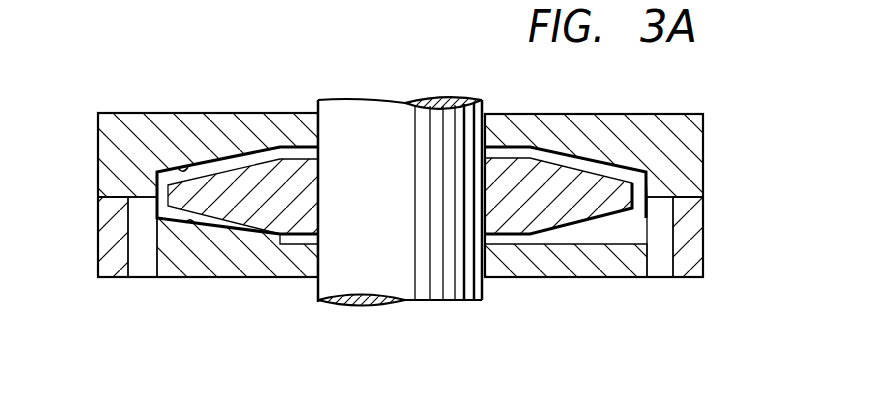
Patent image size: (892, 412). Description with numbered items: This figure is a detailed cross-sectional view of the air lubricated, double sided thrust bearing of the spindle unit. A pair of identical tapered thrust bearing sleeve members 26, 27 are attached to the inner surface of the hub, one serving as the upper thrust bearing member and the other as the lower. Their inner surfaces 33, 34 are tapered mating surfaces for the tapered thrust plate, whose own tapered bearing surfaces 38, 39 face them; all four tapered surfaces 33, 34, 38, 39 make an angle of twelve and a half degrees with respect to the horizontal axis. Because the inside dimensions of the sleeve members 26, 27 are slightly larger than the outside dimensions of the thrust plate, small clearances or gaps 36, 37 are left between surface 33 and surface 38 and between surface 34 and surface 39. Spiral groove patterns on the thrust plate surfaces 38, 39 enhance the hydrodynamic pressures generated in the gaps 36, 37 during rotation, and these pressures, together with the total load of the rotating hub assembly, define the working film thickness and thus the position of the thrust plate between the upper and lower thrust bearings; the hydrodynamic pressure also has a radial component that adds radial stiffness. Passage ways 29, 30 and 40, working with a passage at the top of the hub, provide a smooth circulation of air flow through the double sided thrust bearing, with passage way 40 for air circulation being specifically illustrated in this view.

The tapered thrust bearing sleeve member 26 is at (670, 135).
The tapered thrust bearing sleeve member 27 is at (628, 255).
The passage way 29 is at (308, 128).
The passage way 30 is at (308, 262).
The inner surface of tapered sleeve member 33 is at (157, 170).
The inner surface of tapered sleeve member 34 is at (190, 223).
The gap 36 is at (540, 155).
The gap 37 is at (540, 237).
The bearing surface of thrust plate 38 is at (228, 166).
The bearing surface of thrust plate 39 is at (233, 223).
The passage way 40 is at (653, 235).